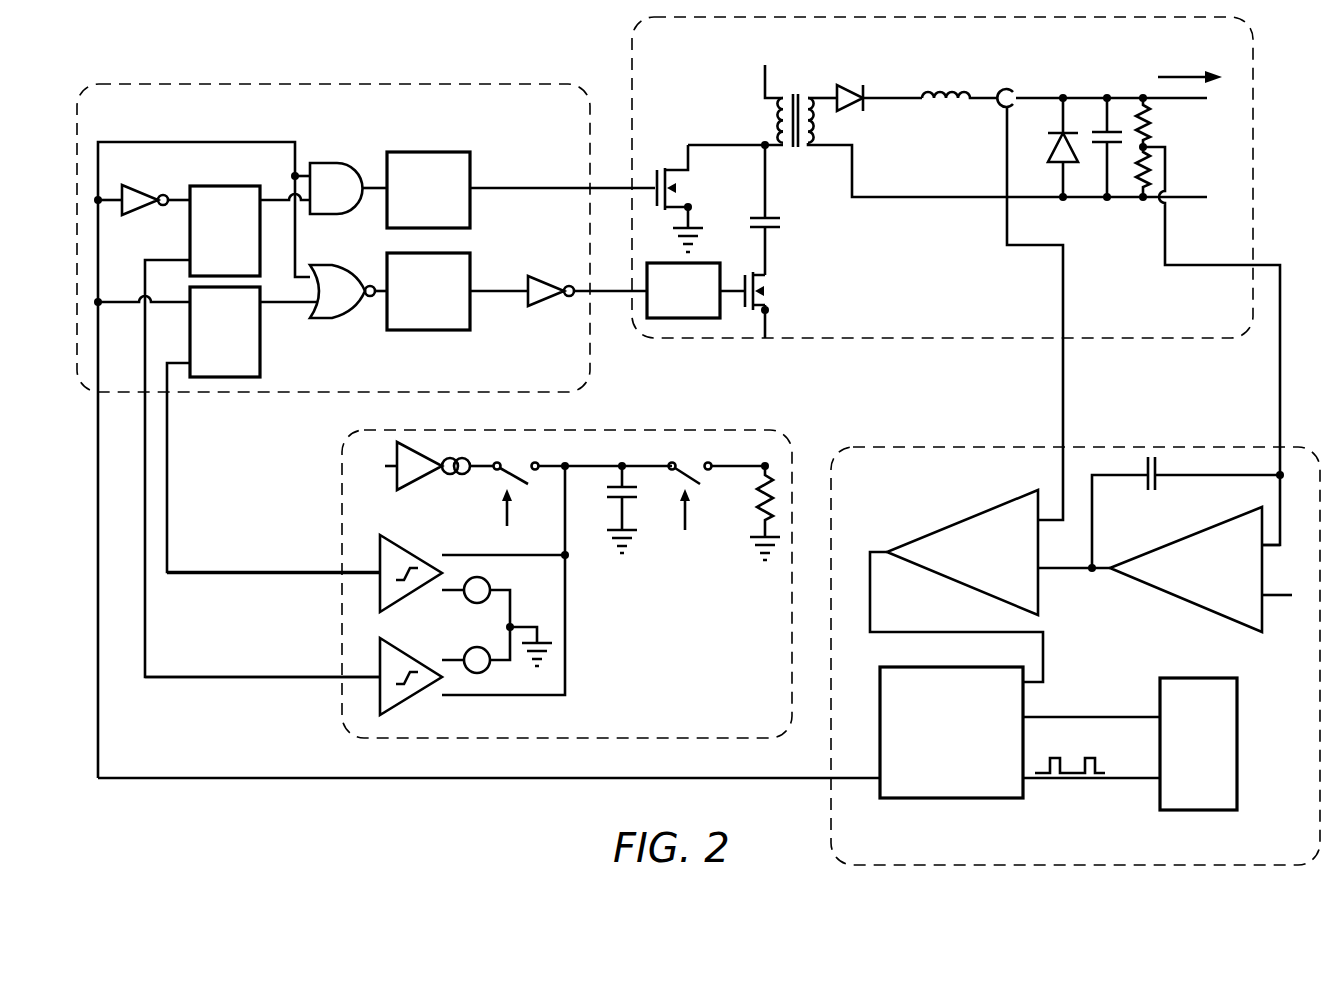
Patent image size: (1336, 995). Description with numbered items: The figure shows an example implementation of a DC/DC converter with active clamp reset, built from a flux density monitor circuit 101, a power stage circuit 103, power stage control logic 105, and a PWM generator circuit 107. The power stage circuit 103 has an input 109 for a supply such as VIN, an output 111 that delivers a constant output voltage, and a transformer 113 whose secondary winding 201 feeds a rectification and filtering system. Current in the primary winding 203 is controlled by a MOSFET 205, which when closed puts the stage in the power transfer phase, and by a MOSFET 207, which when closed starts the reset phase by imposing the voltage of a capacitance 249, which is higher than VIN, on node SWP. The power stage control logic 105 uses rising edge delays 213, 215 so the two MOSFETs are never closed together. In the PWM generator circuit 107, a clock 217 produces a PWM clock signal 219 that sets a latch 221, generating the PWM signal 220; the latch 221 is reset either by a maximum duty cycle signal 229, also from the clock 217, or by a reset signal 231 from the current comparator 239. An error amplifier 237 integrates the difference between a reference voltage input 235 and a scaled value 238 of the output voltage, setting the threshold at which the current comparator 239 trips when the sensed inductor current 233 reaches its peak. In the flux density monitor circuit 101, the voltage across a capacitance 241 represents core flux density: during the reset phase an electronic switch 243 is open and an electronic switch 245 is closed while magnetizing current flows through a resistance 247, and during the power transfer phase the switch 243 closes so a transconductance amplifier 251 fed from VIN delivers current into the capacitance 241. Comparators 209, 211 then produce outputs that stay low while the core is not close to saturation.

The flux density monitor circuit 101 is at (700, 428).
The power stage circuit 103 is at (888, 340).
The power stage control logic 105 is at (366, 431).
The PWM generator circuit 107 is at (992, 447).
The input 109 is at (765, 85).
The output 111 is at (1138, 96).
The transformer 113 is at (789, 102).
The secondary winding 201 is at (812, 120).
The primary winding 203 is at (783, 116).
The MOSFET 205 is at (680, 190).
The MOSFET 207 is at (762, 290).
The comparator 209 is at (398, 561).
The comparator 211 is at (412, 656).
The rising edge delay 213 is at (415, 152).
The rising edge delay 215 is at (418, 330).
The clock 217 is at (1175, 678).
The PWM clock signal 219 is at (1027, 768).
The PWM signal 220 is at (640, 778).
The latch 221 is at (880, 689).
The maximum duty cycle signal 229 is at (1148, 716).
The reset signal 231 is at (905, 631).
The sensed inductor current 233 is at (1063, 308).
The reference voltage input 235 is at (1268, 600).
The error amplifier 237 is at (1218, 530).
The scaled value of VOUT 238 is at (1165, 232).
The current comparator 239 is at (987, 508).
The capacitance 241 is at (622, 498).
The electronic switch 243 is at (507, 470).
The electronic switch 245 is at (686, 468).
The resistance 247 is at (780, 484).
The capacitance 249 is at (770, 229).
The transconductance amplifier 251 is at (417, 485).